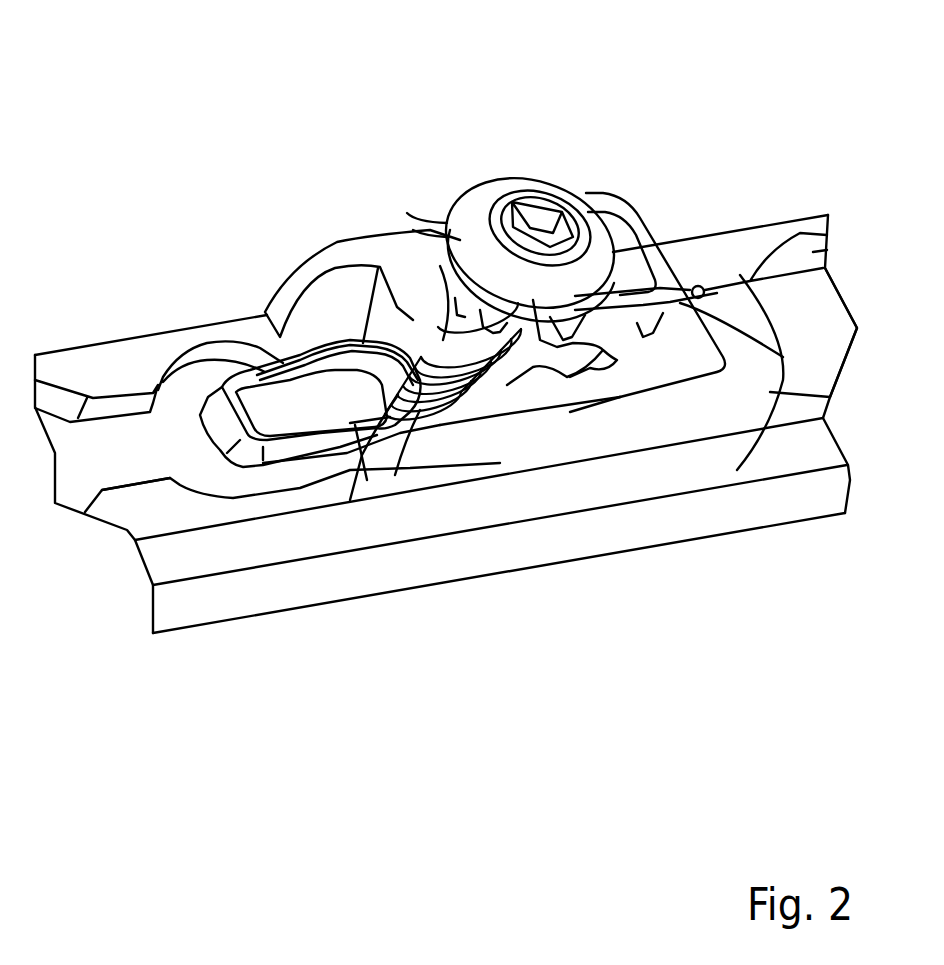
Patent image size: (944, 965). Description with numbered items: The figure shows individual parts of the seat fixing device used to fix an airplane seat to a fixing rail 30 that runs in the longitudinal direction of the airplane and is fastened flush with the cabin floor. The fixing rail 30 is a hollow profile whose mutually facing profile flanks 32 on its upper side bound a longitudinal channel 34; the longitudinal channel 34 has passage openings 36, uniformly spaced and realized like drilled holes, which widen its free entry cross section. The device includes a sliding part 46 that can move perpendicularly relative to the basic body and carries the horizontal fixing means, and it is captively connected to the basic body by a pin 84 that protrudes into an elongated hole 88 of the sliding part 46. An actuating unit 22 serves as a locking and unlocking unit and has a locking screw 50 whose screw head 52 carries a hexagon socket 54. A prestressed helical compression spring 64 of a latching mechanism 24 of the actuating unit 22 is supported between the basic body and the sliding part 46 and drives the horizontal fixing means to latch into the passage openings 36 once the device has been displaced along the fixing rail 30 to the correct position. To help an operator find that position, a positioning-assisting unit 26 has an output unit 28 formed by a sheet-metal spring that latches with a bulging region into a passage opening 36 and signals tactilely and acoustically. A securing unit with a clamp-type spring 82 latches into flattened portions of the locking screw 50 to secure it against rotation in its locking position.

The actuating unit 22 is at (483, 208).
The latching mechanism 24 is at (413, 332).
The positioning-assisting unit 26 is at (197, 475).
The output unit 28 is at (300, 455).
The fixing rail 30 is at (637, 553).
The profile flanks 32 is at (767, 380).
The longitudinal channel 34 is at (827, 338).
The passage openings 36 is at (832, 243).
The sliding part 46 is at (635, 213).
The locking screw 50 is at (482, 237).
The screw head 52 is at (538, 290).
The hexagon socket 54 is at (543, 222).
The helical compression spring 64 is at (410, 395).
The clamp-type spring 82 is at (607, 190).
The pin 84 is at (698, 286).
The elongated hole 88 is at (640, 340).